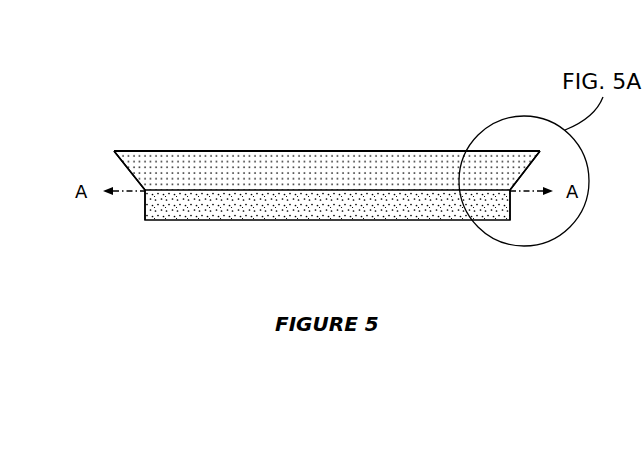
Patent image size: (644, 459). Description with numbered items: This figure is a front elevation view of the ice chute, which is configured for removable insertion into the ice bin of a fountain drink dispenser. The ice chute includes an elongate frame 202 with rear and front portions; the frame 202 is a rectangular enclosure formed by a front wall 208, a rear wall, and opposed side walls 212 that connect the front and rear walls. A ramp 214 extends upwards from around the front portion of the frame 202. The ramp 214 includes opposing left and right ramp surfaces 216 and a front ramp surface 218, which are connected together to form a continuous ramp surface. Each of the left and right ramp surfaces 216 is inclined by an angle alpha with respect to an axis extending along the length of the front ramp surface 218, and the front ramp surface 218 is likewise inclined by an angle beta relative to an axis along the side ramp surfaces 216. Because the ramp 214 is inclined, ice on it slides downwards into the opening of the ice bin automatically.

The elongate frame 202 is at (243, 78).
The front wall 208 is at (242, 217).
The side walls 212 is at (144, 212).
The ramp 214 is at (302, 147).
The left and right ramp surfaces 216 is at (124, 165).
The front ramp surface 218 is at (188, 168).